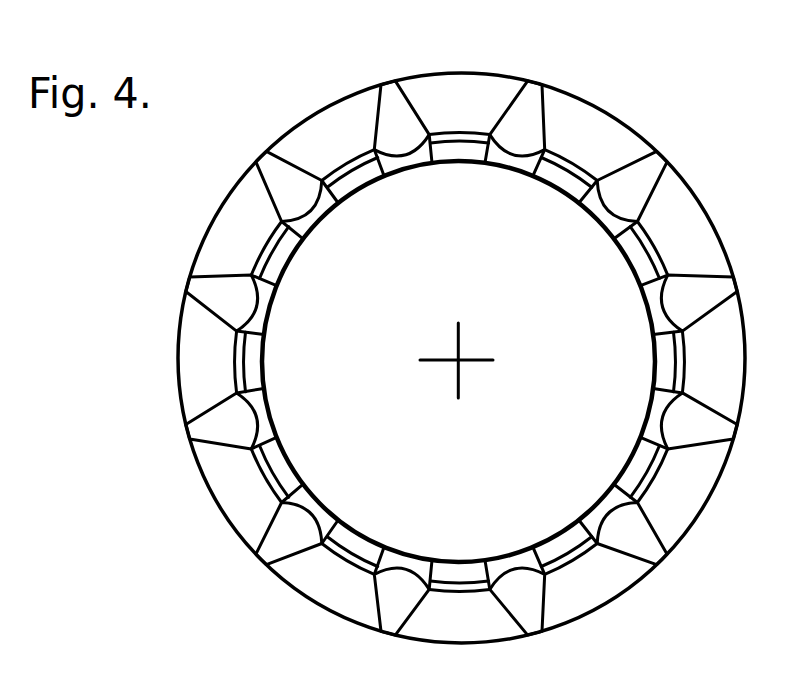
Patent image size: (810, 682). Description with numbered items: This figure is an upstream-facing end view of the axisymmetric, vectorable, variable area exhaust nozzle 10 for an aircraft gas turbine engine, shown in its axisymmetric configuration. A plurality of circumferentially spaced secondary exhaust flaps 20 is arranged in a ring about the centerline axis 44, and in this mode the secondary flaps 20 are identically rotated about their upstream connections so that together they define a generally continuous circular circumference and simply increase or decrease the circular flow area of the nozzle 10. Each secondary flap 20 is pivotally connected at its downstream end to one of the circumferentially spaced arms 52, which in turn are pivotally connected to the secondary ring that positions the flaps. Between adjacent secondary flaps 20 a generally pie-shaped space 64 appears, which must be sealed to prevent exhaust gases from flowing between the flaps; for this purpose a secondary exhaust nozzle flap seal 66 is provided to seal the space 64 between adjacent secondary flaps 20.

The exhaust nozzle 10 is at (461, 325).
The secondary exhaust flap 20 is at (561, 183).
The centerline axis 44 is at (463, 355).
The arm 52 is at (596, 128).
The pie-shaped space 64 is at (522, 108).
The secondary exhaust nozzle flap seal 66 is at (410, 568).